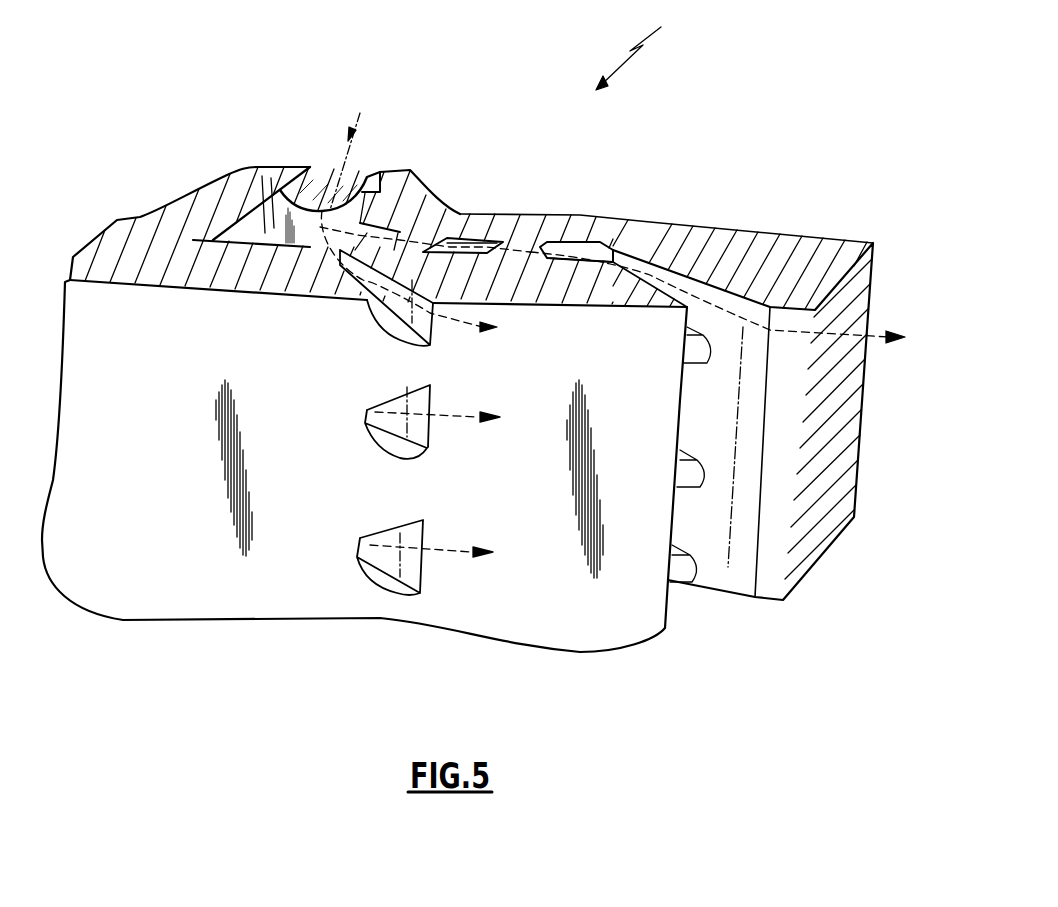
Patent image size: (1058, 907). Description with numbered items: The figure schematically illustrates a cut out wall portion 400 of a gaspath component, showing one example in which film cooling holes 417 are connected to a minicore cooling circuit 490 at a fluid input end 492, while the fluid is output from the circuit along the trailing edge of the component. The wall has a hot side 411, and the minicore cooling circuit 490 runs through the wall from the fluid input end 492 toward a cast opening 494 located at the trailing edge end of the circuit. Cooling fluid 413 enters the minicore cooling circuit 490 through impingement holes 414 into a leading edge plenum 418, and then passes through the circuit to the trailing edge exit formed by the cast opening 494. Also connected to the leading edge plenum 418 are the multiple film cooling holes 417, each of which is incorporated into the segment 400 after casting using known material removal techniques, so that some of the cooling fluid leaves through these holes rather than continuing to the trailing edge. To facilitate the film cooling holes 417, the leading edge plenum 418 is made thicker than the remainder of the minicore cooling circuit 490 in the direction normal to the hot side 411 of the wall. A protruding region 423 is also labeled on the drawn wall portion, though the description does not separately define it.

The cut out wall portion 400 is at (650, 52).
The hot side 411 is at (210, 593).
The cooling fluid 413 is at (343, 158).
The impingement holes 414 is at (308, 180).
The film cooling holes 417 is at (427, 332).
The leading edge plenum 418 is at (272, 178).
The protrusion 423 is at (213, 232).
The minicore cooling circuit 490 is at (489, 240).
The fluid input end 492 is at (250, 227).
The cast opening 494 is at (693, 597).